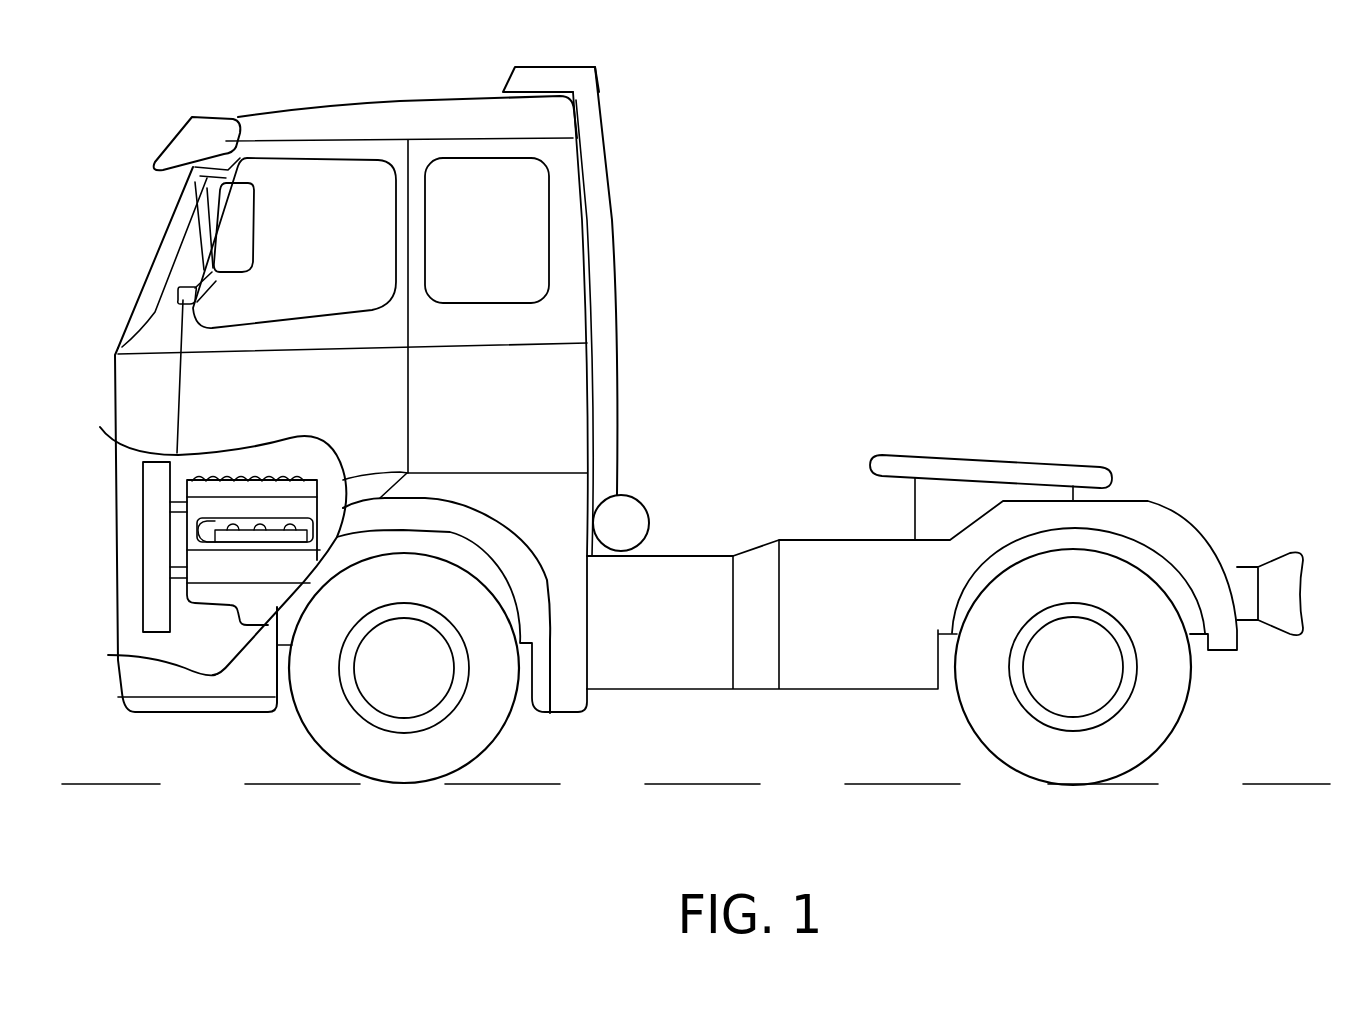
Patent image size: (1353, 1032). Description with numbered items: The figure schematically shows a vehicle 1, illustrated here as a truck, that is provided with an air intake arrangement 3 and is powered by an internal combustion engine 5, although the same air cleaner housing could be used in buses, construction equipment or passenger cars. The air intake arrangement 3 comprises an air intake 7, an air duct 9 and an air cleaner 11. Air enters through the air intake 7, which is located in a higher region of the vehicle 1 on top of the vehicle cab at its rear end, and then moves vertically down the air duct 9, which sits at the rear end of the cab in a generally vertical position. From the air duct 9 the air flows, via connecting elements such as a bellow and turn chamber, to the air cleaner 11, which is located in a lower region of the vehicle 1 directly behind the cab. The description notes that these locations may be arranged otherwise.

The vehicle 1 is at (826, 114).
The air intake arrangement 3 is at (633, 135).
The internal combustion engine 5 is at (233, 563).
The air intake 7 is at (520, 80).
The air duct 9 is at (602, 278).
The air cleaner 11 is at (620, 523).